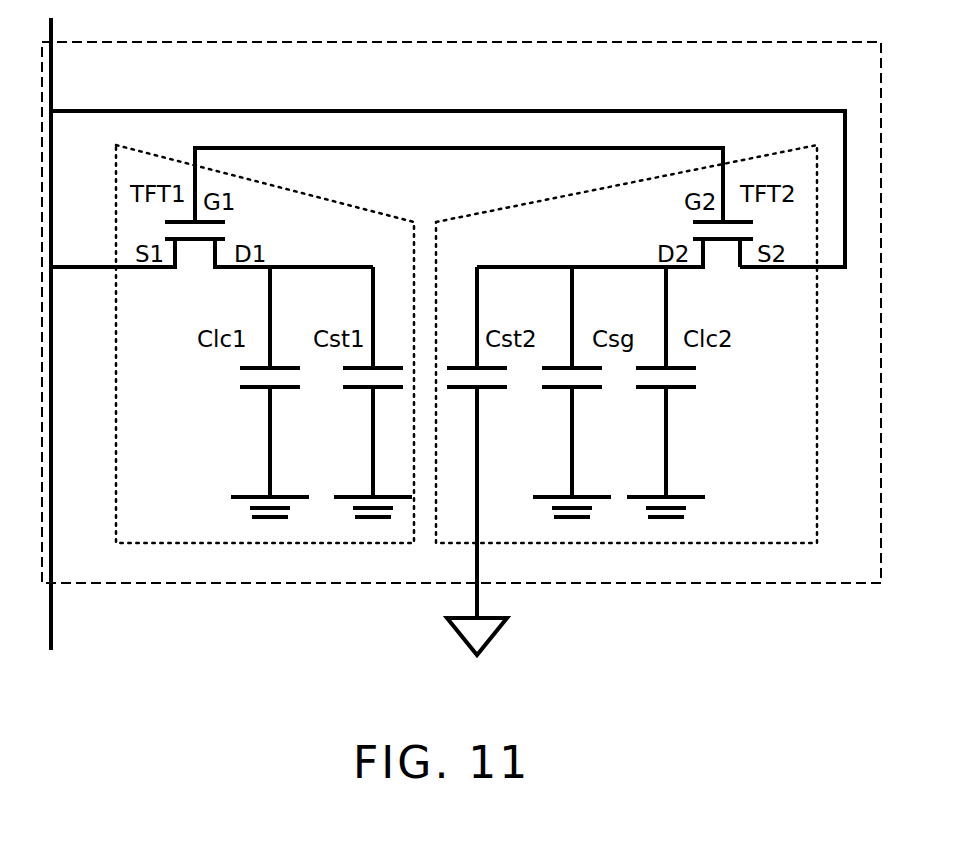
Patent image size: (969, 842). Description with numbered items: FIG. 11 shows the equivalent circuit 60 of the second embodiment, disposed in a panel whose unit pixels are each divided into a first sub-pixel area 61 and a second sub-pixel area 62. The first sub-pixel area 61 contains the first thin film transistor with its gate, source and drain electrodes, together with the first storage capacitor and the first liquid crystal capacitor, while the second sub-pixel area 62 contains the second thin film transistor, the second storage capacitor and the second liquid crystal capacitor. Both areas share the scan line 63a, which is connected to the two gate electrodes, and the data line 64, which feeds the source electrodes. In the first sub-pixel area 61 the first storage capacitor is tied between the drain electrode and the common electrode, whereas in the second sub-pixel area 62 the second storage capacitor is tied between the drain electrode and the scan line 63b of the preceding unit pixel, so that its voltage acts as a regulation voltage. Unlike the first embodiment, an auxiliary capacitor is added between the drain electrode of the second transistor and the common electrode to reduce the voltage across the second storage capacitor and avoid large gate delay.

The equivalent circuit 60 is at (641, 30).
The first sub-pixel area 61 is at (114, 442).
The second sub-pixel area 62 is at (818, 445).
The scan line 63a is at (317, 147).
The scan line of the (M-1)th unit pixel 63b is at (497, 636).
The data line 64 is at (272, 110).